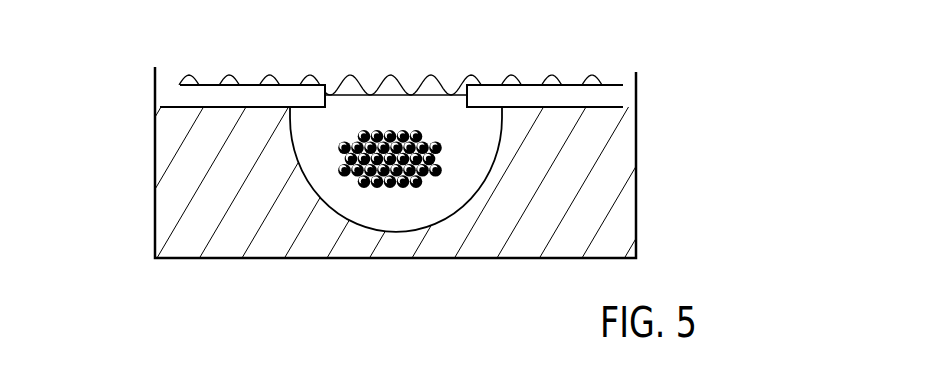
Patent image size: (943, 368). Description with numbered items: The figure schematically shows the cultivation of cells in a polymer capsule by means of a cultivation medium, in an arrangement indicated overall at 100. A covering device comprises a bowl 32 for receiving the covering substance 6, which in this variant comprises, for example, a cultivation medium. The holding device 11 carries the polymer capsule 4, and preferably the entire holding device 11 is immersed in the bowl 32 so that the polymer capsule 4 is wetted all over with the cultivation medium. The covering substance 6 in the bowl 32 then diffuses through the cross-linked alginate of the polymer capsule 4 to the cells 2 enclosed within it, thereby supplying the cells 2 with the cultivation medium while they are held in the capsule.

The sensor device 100 is at (692, 145).
The cells 2 is at (344, 160).
The polymer capsule 4 is at (477, 150).
The covering substance 6 is at (177, 195).
The holding device 11 is at (243, 83).
The bowl 32 is at (635, 185).